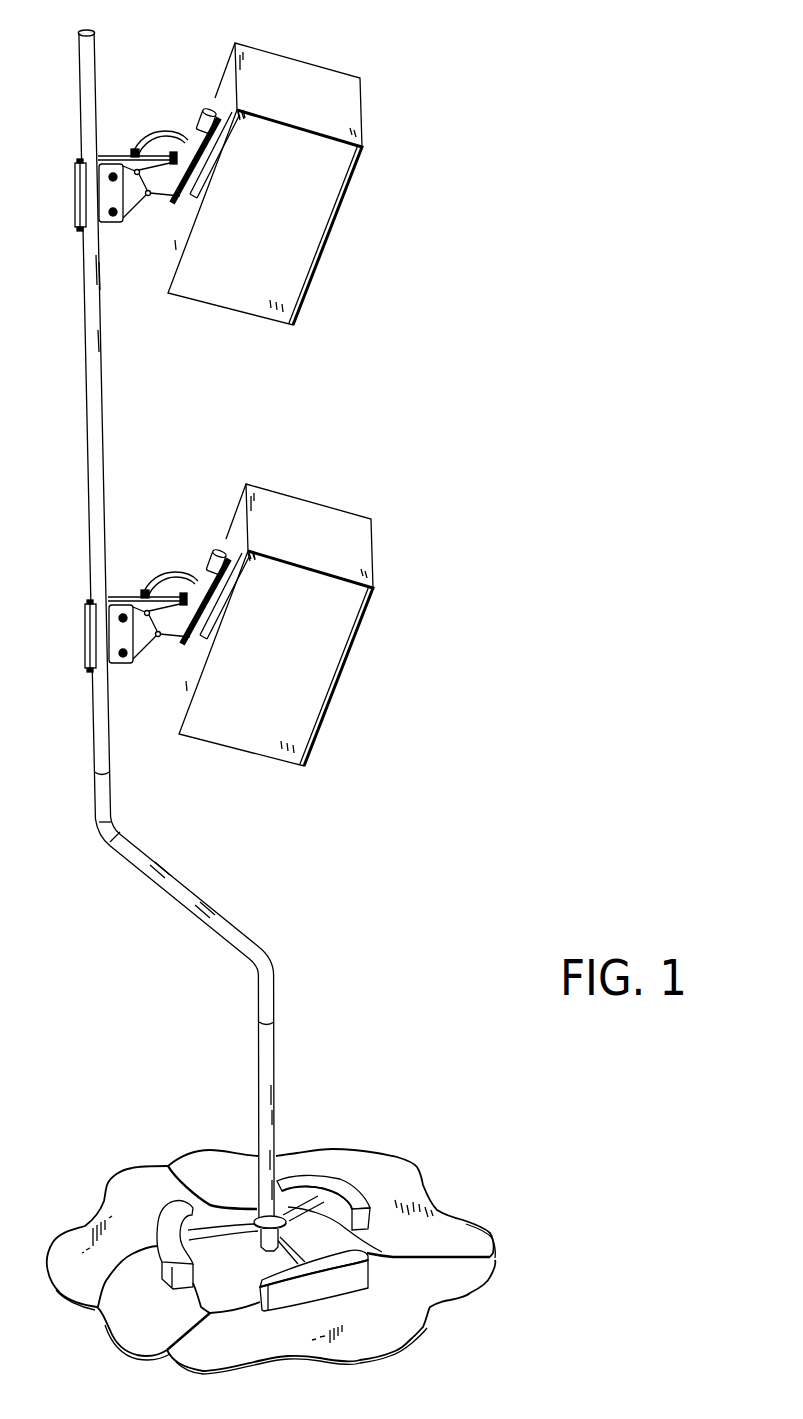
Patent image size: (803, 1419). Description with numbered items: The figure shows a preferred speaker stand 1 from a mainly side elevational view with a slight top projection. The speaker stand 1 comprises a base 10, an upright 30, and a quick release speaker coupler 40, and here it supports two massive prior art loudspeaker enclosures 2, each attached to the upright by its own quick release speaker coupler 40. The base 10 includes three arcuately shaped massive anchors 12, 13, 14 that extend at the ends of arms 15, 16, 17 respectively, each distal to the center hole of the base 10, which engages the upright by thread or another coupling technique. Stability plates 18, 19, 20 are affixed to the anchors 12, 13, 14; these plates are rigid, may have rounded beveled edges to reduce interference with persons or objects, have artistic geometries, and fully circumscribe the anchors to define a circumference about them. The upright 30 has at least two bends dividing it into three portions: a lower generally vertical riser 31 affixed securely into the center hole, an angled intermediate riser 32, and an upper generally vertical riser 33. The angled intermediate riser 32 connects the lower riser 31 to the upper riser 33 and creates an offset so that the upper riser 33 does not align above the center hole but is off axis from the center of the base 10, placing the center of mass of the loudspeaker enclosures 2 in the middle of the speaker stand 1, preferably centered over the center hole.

The speaker stand 1 is at (487, 77).
The loudspeaker enclosure 2 is at (362, 117).
The base 10 is at (523, 1311).
The arcuately shaped massive anchor 12 is at (343, 1188).
The arcuately shaped massive anchor 13 is at (366, 1272).
The arcuately shaped massive anchor 14 is at (104, 1308).
The arm 15 is at (306, 1190).
The arm 16 is at (362, 1276).
The arm 17 is at (213, 1243).
The stability plate 18 is at (413, 1190).
The stability plate 19 is at (305, 1345).
The stability plate 20 is at (138, 1198).
The upright 30 is at (227, 981).
The lower generally vertical riser 31 is at (266, 1067).
The angled intermediate riser 32 is at (235, 937).
The upper generally vertical riser 33 is at (100, 470).
The quick release speaker coupler 40 is at (66, 198).